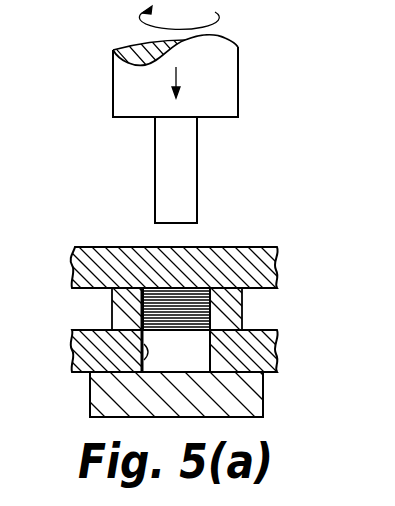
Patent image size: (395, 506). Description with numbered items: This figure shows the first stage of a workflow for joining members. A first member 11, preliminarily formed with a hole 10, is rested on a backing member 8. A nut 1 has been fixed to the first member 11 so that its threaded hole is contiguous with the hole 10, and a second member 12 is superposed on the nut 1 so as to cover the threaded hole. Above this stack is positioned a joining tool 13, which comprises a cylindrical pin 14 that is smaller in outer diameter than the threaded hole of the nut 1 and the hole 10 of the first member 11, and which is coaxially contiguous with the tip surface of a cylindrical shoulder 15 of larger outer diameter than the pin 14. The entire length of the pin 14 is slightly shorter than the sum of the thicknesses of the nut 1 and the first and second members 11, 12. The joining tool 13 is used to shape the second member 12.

The nut 1 is at (245, 306).
The backing member 8 is at (265, 398).
The hole 10 is at (150, 352).
The first member 11 is at (80, 374).
The second member 12 is at (280, 262).
The joining tool 13 is at (111, 83).
The cylindrical pin 14 is at (195, 170).
The cylindrical shoulder 15 is at (232, 63).